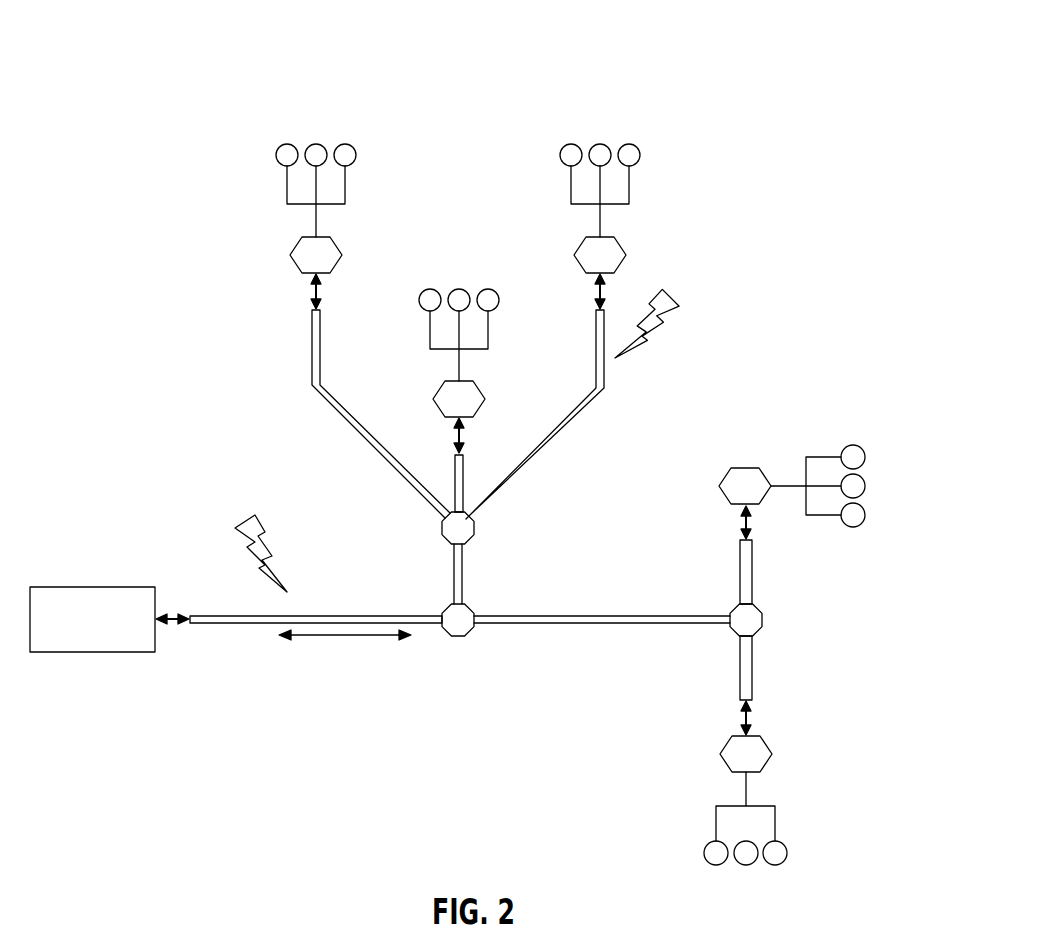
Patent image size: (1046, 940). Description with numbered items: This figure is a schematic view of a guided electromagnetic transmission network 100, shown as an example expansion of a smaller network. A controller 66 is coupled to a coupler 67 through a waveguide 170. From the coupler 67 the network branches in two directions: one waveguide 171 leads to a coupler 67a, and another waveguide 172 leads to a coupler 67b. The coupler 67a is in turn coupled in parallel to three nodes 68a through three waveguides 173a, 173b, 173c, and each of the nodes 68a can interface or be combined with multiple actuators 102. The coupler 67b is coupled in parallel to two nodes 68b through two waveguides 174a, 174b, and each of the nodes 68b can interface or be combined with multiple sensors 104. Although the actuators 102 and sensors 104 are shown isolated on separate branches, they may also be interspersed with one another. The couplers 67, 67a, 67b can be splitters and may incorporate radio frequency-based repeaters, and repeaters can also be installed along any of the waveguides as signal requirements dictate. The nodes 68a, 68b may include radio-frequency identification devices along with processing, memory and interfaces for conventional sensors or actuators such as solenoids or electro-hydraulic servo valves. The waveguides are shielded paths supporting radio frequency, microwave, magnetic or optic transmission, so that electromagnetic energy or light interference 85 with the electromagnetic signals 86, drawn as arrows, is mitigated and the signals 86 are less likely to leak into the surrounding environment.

The guided electromagnetic transmission network 100 is at (184, 36).
The actuators 102 is at (350, 146).
The sensors 104 is at (853, 448).
The controller 66 is at (106, 632).
The coupler 67 is at (457, 637).
The coupler 67a is at (474, 538).
The coupler 67b is at (762, 616).
The nodes 68a is at (342, 253).
The nodes 68b is at (748, 466).
The electromagnetic energy or light interference 85 is at (262, 520).
The electromagnetic signals 86 is at (345, 640).
The waveguide 170 is at (232, 626).
The waveguide 171 is at (454, 574).
The waveguide 172 is at (580, 625).
The waveguide 173a is at (312, 348).
The waveguide 173b is at (450, 486).
The waveguide 173c is at (540, 458).
The waveguide 174a is at (740, 574).
The waveguide 174b is at (740, 668).